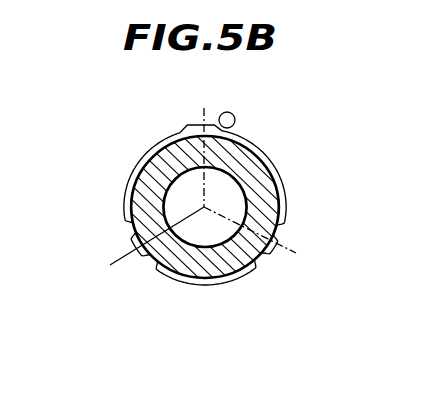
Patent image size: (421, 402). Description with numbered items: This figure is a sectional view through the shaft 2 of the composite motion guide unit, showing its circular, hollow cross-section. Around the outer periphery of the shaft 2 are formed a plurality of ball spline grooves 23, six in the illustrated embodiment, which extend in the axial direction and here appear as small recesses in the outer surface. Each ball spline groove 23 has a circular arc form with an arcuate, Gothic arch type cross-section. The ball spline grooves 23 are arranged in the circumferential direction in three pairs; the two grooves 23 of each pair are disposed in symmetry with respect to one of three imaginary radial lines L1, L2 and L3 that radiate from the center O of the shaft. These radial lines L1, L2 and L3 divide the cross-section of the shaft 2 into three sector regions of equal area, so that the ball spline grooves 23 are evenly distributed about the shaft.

The shaft 2 is at (213, 207).
The ball spline groove 23 is at (186, 127).
The imaginary radial line L1 is at (217, 145).
The imaginary radial line L2 is at (145, 248).
The imaginary radial line L3 is at (264, 241).